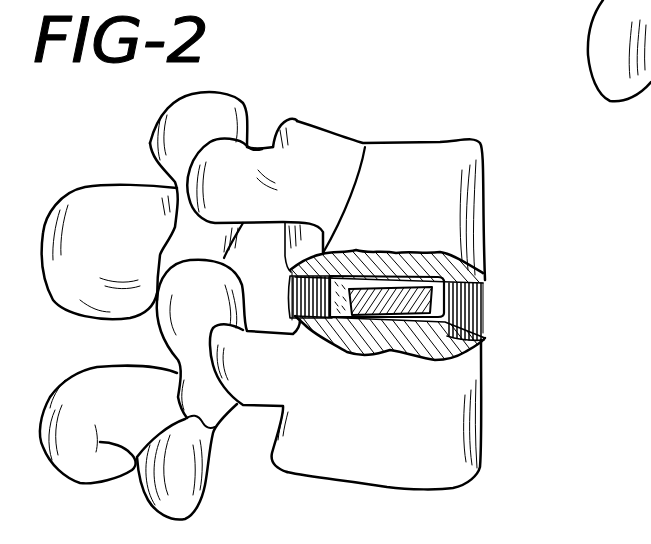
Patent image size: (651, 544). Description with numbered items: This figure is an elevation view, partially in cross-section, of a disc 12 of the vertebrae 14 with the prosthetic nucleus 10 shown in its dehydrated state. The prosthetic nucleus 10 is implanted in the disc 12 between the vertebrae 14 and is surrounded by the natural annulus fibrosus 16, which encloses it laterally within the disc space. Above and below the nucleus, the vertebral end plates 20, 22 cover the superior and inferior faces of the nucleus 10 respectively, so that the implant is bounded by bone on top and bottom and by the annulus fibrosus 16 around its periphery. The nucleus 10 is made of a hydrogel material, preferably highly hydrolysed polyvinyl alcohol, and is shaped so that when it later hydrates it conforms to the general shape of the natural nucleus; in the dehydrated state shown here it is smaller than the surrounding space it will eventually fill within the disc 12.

The prosthetic nucleus 10 is at (465, 303).
The disc 12 is at (505, 320).
The vertebrae 14 is at (470, 167).
The annulus fibrosus 16 is at (365, 147).
The vertebral end plate 20 is at (440, 253).
The vertebral end plate 22 is at (443, 363).